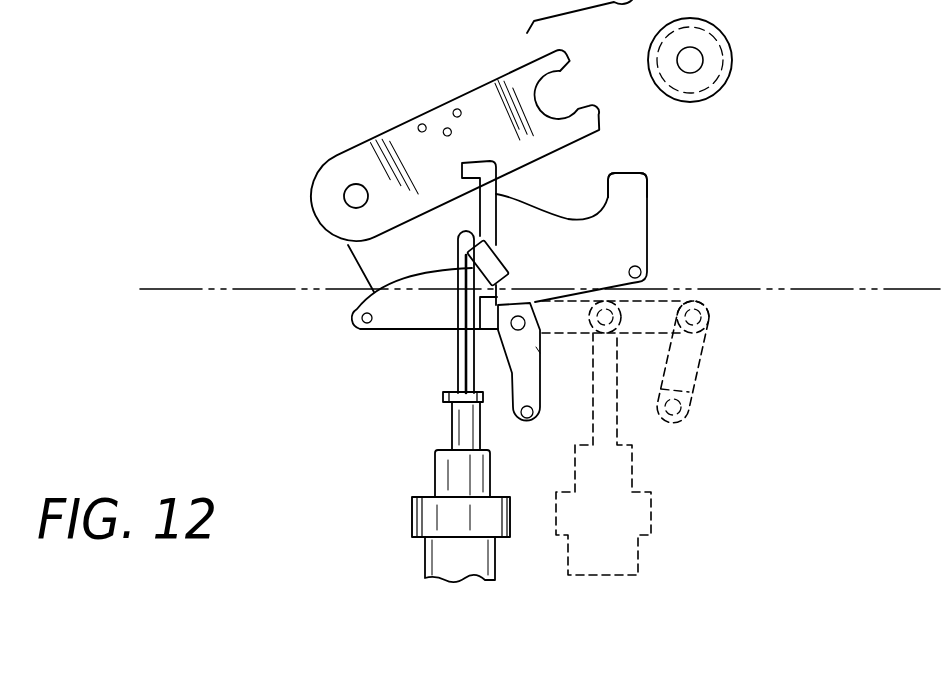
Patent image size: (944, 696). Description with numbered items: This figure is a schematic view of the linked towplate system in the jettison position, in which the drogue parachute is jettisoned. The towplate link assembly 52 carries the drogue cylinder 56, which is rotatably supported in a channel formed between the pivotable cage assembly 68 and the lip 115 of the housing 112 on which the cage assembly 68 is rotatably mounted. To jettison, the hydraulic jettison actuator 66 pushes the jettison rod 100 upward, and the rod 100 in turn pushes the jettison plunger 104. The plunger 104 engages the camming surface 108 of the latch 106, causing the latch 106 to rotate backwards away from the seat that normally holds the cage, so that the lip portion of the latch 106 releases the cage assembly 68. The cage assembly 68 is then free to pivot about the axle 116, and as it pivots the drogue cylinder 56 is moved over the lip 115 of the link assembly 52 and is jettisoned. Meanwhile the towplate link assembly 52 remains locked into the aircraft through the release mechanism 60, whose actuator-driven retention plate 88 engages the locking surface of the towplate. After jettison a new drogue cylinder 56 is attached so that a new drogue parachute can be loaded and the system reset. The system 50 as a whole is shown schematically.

The axis / pivot line 50 is at (214, 287).
The towplate link assembly 52 is at (350, 255).
The drogue cylinder 56 is at (745, 55).
The release mechanism 60 is at (715, 358).
The hydraulic jettison actuator 66 is at (425, 473).
The pivotable cage assembly 68 is at (400, 125).
The retention plate 88 is at (456, 360).
The jettison rod 100 is at (450, 427).
The jettison plunger 104 is at (368, 299).
The latch 106 is at (482, 156).
The camming surface 108 is at (492, 235).
The housing 112 is at (626, 210).
The lip 115 is at (603, 186).
The axle 116 is at (352, 186).